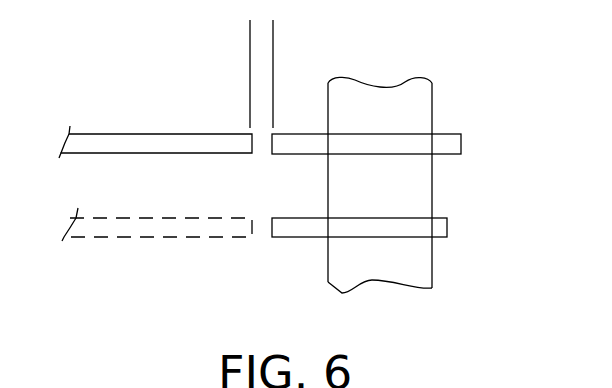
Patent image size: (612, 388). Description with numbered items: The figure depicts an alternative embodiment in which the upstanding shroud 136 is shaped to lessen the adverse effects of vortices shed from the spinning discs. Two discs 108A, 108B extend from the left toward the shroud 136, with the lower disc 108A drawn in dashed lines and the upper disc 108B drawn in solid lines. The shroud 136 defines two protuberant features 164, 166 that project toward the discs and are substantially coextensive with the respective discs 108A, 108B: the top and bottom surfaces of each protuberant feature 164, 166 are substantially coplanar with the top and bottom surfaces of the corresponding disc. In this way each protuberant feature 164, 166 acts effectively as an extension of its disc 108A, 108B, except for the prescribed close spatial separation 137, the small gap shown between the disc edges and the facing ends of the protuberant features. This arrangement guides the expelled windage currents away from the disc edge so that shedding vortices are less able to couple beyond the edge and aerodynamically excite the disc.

The prescribed close spatial separation 137 is at (183, 35).
The disc 108B is at (203, 134).
The disc 108A is at (213, 218).
The upstanding shroud 136 is at (328, 167).
The protuberant feature 164 is at (297, 138).
The protuberant feature 166 is at (288, 226).